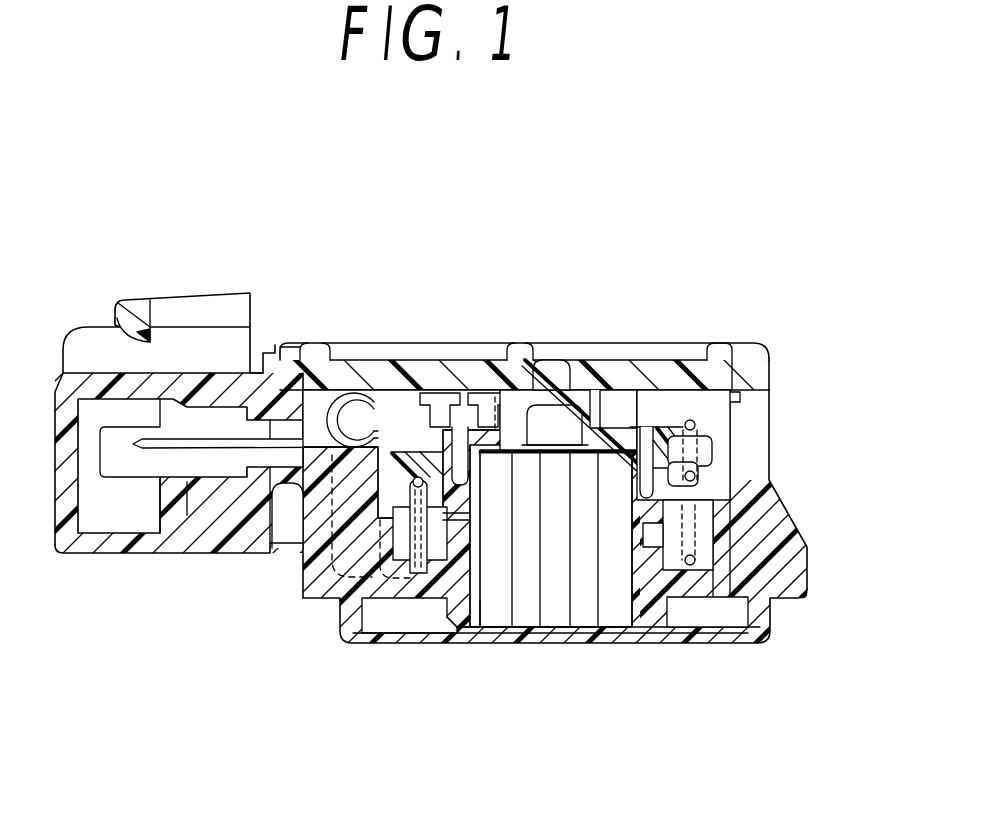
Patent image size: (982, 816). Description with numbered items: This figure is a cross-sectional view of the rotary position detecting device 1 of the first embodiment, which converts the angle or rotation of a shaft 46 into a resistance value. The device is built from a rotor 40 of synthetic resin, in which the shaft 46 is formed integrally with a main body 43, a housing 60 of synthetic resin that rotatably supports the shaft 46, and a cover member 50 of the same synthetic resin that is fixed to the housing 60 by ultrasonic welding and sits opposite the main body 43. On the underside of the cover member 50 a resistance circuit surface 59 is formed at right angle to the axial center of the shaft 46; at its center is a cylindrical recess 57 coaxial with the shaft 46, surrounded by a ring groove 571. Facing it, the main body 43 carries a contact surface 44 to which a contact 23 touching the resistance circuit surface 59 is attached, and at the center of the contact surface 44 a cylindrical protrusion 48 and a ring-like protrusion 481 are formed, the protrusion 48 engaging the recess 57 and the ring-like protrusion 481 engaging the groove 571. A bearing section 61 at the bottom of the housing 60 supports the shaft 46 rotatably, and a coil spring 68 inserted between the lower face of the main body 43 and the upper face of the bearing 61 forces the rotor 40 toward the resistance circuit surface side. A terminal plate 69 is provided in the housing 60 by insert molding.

The rotary position detecting device 1 is at (397, 176).
The contact 23 is at (410, 396).
The rotor 40 is at (555, 636).
The main body 43 is at (700, 432).
The contact surface 44 is at (660, 425).
The shaft 46 is at (496, 600).
The protrusion 48 is at (523, 368).
The ring-like protrusion 481 is at (590, 370).
The cover member 50 is at (648, 360).
The cylindrical recess 57 is at (548, 383).
The ring groove 571 is at (487, 393).
The resistance circuit surface 59 is at (660, 393).
The housing 60 is at (797, 515).
The bearing section 61 is at (432, 585).
The coil spring 68 is at (697, 540).
The terminal plate 69 is at (135, 447).